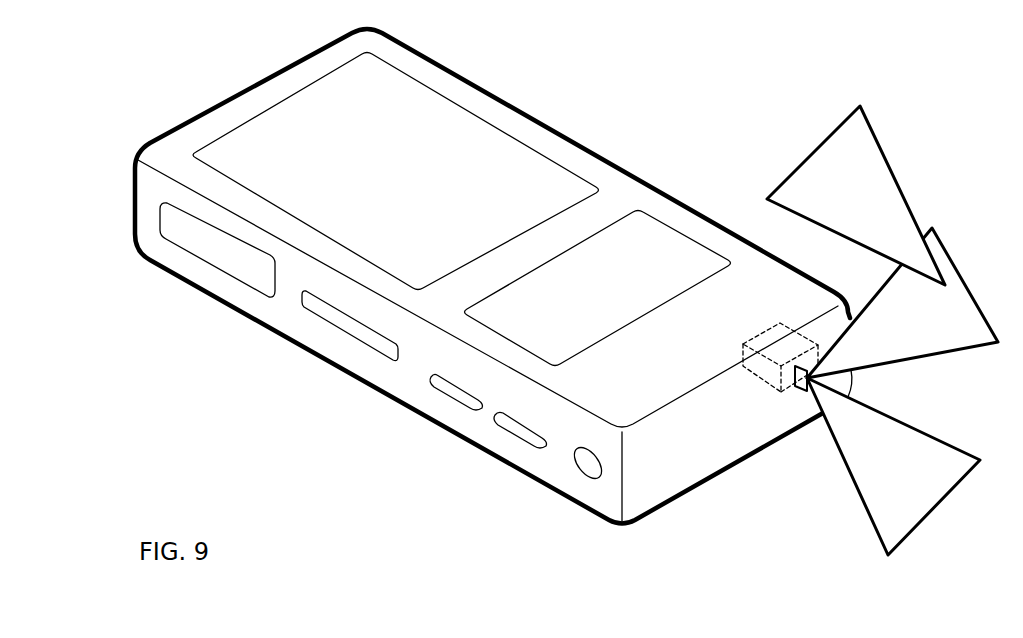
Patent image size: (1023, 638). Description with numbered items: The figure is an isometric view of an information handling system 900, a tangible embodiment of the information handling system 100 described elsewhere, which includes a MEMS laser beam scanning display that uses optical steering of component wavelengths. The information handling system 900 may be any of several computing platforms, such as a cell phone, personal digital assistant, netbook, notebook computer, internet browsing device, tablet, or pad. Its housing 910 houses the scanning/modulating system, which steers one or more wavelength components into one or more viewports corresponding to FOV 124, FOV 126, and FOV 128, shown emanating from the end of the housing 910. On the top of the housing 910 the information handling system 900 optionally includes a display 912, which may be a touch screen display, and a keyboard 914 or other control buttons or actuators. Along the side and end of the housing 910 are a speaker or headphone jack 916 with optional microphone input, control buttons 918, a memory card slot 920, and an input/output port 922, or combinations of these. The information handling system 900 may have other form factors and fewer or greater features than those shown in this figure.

The information handling system 900 is at (666, 77).
The housing 910 is at (485, 87).
The display 912 is at (292, 123).
The keyboard 914 is at (657, 240).
The speaker or headphone jack 916 is at (586, 467).
The control buttons 918 is at (503, 417).
The memory card slot 920 is at (316, 313).
The input/output port 922 is at (172, 220).
The information handling system 100 is at (780, 323).
The FOV 124 is at (911, 530).
The FOV 126 is at (950, 247).
The FOV 128 is at (858, 107).